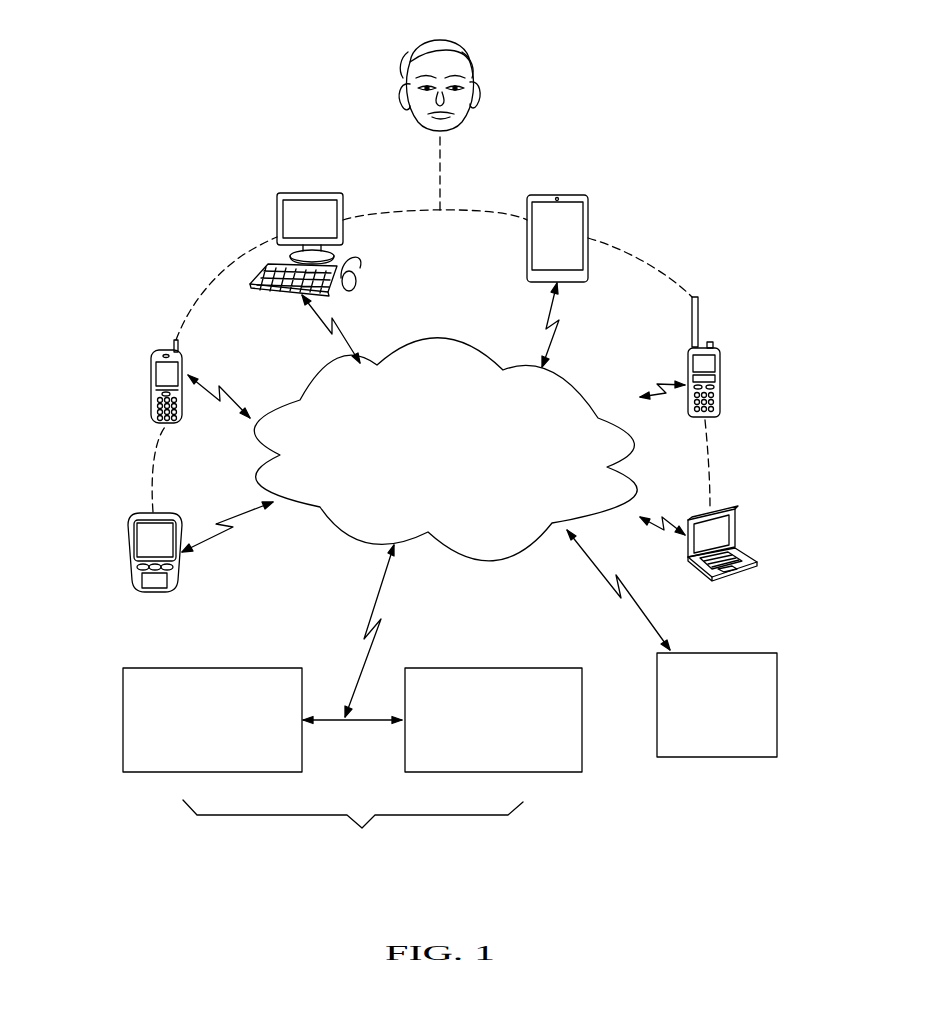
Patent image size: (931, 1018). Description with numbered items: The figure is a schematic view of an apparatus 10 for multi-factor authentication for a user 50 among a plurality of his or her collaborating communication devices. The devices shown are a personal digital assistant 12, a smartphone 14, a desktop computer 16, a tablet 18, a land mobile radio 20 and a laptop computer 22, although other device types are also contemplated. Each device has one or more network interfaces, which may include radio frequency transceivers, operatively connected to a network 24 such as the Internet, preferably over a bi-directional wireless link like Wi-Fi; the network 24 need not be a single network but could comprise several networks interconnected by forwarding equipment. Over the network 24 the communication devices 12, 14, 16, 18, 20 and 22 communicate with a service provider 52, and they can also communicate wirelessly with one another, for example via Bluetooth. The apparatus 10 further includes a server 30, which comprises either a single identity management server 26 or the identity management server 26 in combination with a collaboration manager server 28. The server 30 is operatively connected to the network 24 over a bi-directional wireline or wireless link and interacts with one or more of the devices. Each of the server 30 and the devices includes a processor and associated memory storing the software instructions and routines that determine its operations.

The apparatus for multi-factor authentication 10 is at (213, 97).
The personal digital assistant 12 is at (130, 545).
The smartphone 14 is at (150, 387).
The desktop computer 16 is at (307, 193).
The tablet 18 is at (588, 213).
The land mobile radio 20 is at (720, 368).
The laptop computer 22 is at (735, 528).
The network 24 is at (500, 540).
The identity management server 26 is at (123, 712).
The collaboration manager server 28 is at (572, 772).
The server 30 is at (353, 827).
The user 50 is at (470, 60).
The service provider 52 is at (753, 758).